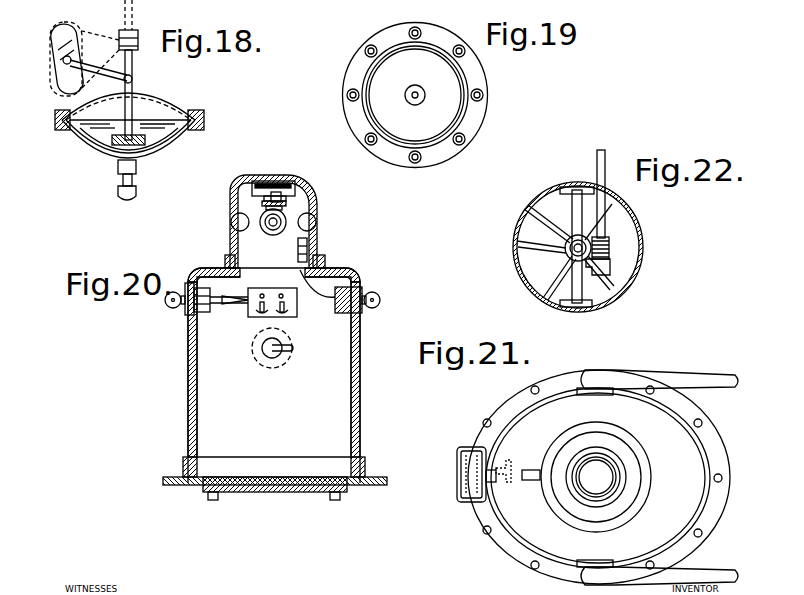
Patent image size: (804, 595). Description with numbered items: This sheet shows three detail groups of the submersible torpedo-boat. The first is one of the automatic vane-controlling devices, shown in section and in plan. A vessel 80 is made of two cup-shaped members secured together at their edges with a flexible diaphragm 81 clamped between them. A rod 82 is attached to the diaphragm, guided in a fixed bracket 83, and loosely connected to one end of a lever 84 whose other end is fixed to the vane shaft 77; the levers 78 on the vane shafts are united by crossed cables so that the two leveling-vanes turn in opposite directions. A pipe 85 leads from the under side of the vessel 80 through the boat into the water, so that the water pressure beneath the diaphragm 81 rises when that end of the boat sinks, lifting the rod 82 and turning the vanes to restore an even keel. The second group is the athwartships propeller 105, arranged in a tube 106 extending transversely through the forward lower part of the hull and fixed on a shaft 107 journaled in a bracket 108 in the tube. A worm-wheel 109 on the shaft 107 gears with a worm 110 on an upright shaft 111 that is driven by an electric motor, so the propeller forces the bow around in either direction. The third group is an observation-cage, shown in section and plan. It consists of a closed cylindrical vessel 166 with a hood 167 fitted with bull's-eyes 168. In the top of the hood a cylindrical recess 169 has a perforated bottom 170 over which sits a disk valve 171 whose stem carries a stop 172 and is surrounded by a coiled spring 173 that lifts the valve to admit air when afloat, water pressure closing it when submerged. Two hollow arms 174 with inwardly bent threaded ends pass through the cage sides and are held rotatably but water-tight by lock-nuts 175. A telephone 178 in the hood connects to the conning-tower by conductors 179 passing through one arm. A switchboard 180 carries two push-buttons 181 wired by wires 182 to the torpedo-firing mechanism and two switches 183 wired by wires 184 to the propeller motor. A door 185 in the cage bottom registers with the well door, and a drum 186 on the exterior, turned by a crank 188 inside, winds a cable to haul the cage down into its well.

In FIG. 18, the vane shaft 77 is at (63, 61).
In FIG. 18, the lever 78 is at (80, 46).
In FIG. 18, the vessel 80 is at (150, 104).
In FIG. 19, the vessel 80 is at (415, 95).
In FIG. 18, the flexible diaphragm 81 is at (160, 150).
In FIG. 18, the rod 82 is at (132, 58).
In FIG. 19, the rod 82 is at (413, 97).
In FIG. 18, the fixed bracket 83 is at (134, 37).
In FIG. 18, the lever 84 is at (100, 74).
In FIG. 18, the pipe 85 is at (132, 196).
In FIG. 22, the athwartships propeller 105 is at (566, 243).
In FIG. 22, the tube 106 is at (514, 262).
In FIG. 22, the shaft 107 is at (575, 252).
In FIG. 22, the bracket 108 is at (576, 210).
In FIG. 22, the worm-wheel 109 is at (593, 243).
In FIG. 22, the worm 110 is at (612, 252).
In FIG. 22, the upright shaft 111 is at (603, 165).
In FIG. 20, the cylindrical vessel 166 is at (190, 388).
In FIG. 21, the cylindrical vessel 166 is at (599, 477).
In FIG. 20, the hood 167 is at (312, 197).
In FIG. 21, the hood 167 is at (625, 463).
In FIG. 20, the bull's-eyes 168 is at (272, 226).
In FIG. 20, the cylindrical recess 169 is at (290, 186).
In FIG. 21, the cylindrical recess 169 is at (614, 484).
In FIG. 20, the perforated bottom 170 is at (264, 203).
In FIG. 20, the disk valve 171 is at (266, 177).
In FIG. 21, the disk valve 171 is at (596, 477).
In FIG. 20, the stop 172 is at (282, 203).
In FIG. 20, the coiled spring 173 is at (266, 208).
In FIG. 20, the hollow arms 174 is at (168, 304).
In FIG. 21, the hollow arms 174 is at (688, 382).
In FIG. 20, the lock-nuts 175 is at (205, 316).
In FIG. 20, the telephone 178 is at (308, 246).
In FIG. 20, the conductors 179 is at (322, 285).
In FIG. 20, the switchboard 180 is at (288, 302).
In FIG. 20, the push-buttons 181 is at (270, 288).
In FIG. 20, the wires 182 is at (246, 298).
In FIG. 20, the switches 183 is at (268, 339).
In FIG. 20, the wires 184 is at (246, 304).
In FIG. 20, the door 185 is at (272, 488).
In FIG. 21, the drum 186 is at (457, 465).
In FIG. 21, the crank 188 is at (505, 465).